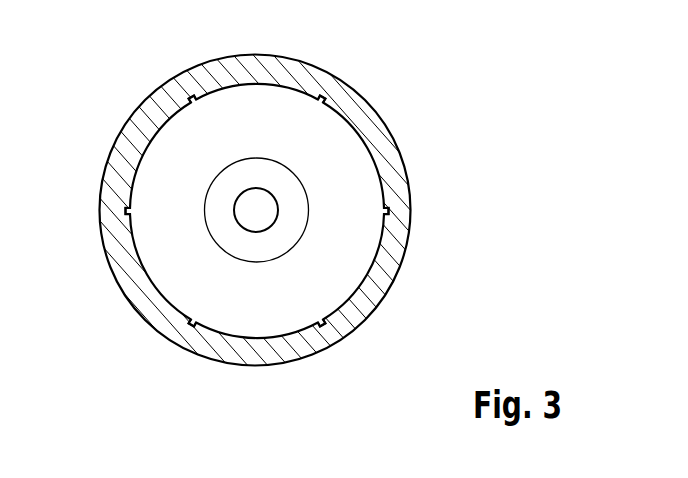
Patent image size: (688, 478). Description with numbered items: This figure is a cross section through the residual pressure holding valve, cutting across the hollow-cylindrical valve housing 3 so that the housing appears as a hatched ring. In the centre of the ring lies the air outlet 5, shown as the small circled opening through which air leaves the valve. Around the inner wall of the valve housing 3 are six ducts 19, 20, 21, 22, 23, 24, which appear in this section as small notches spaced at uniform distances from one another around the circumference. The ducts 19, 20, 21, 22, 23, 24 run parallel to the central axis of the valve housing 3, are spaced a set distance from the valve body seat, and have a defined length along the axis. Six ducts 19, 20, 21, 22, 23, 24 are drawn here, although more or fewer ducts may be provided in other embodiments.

The valve housing 3 is at (377, 82).
The air outlet 5 is at (264, 222).
The duct 19 is at (389, 211).
The duct 20 is at (322, 98).
The duct 21 is at (190, 98).
The duct 22 is at (127, 211).
The duct 23 is at (192, 324).
The duct 24 is at (322, 324).